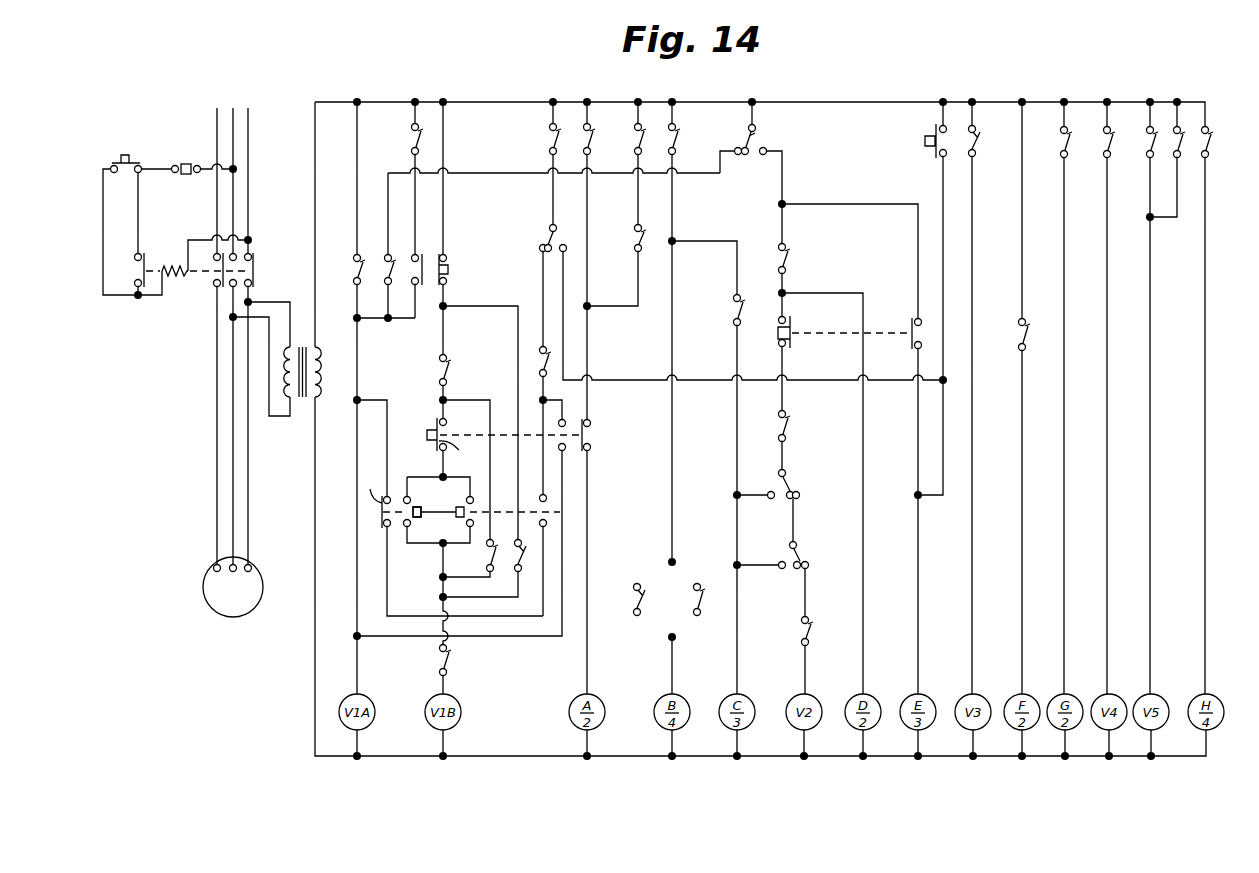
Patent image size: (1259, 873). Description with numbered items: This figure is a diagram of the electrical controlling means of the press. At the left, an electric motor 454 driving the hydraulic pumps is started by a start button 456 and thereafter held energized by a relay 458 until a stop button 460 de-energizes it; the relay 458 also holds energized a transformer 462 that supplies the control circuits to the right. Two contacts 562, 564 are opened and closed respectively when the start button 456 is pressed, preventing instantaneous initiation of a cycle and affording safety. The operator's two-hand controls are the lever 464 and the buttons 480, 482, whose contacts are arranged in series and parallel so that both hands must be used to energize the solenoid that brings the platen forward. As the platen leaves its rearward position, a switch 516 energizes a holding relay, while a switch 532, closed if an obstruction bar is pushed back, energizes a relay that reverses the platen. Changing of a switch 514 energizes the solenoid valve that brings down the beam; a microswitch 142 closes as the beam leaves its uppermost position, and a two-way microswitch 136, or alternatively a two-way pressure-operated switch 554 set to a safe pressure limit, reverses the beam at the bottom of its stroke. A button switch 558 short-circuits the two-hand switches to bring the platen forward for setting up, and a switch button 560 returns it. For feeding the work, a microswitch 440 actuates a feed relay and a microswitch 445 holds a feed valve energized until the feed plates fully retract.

The start button 456 is at (118, 161).
The stop button 460 is at (182, 164).
The relay 458 is at (177, 290).
The electric motor 454 is at (246, 602).
The transformer 462 is at (298, 406).
The switch button 560 is at (449, 270).
The upstanding lever 464 is at (427, 434).
The button 482 is at (460, 507).
The button 480 is at (420, 518).
The switch 514 is at (756, 145).
The button switch 558 is at (925, 142).
The microswitch 142 is at (976, 146).
The microswitch 440 is at (1069, 143).
The microswitch 445 is at (1183, 143).
The switch 516 is at (1210, 145).
The contact 562 is at (778, 339).
The contact 564 is at (911, 345).
The switch 532 is at (645, 601).
The microswitch 136 is at (789, 485).
The pressure-operated switch 554 is at (798, 556).